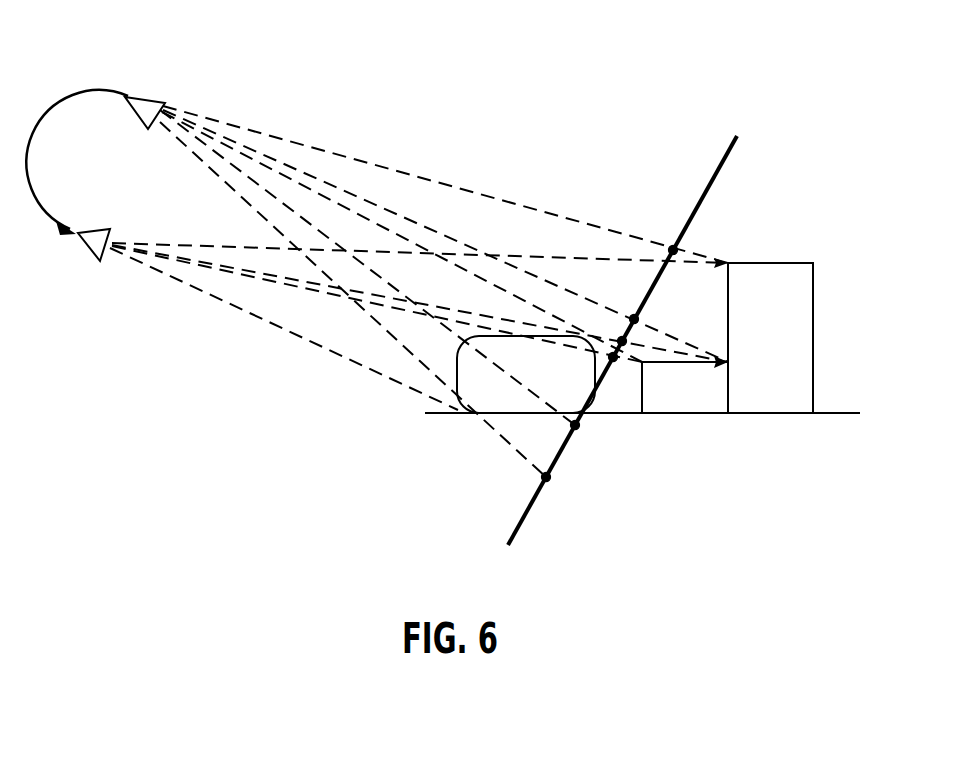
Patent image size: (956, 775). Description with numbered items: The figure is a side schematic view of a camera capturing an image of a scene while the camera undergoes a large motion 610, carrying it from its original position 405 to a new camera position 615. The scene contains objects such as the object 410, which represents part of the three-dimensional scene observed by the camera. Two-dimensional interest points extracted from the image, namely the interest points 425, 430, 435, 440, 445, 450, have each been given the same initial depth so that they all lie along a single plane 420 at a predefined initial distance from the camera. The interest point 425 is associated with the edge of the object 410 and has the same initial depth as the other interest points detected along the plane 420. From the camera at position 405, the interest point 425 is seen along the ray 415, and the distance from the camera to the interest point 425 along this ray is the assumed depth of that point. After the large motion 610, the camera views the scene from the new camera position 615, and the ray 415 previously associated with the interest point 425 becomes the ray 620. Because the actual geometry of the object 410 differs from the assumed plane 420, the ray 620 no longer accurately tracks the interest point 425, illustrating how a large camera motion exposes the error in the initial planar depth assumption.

The camera position 405 is at (150, 97).
The object 410 is at (770, 337).
The ray 415 is at (453, 190).
The plane 420 is at (737, 136).
The interest point 425 is at (676, 248).
The interest point 430 is at (637, 318).
The interest point 435 is at (621, 338).
The interest point 440 is at (645, 364).
The interest point 445 is at (578, 427).
The interest point 450 is at (549, 479).
The large motion 610 is at (67, 97).
The new camera position 615 is at (85, 228).
The ray 620 is at (218, 247).